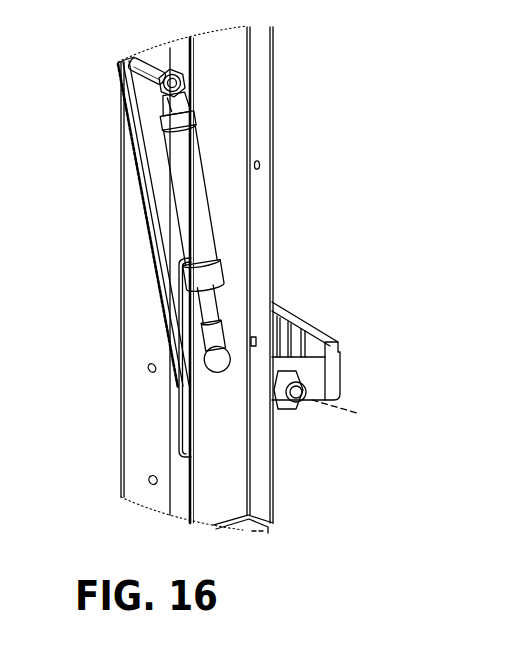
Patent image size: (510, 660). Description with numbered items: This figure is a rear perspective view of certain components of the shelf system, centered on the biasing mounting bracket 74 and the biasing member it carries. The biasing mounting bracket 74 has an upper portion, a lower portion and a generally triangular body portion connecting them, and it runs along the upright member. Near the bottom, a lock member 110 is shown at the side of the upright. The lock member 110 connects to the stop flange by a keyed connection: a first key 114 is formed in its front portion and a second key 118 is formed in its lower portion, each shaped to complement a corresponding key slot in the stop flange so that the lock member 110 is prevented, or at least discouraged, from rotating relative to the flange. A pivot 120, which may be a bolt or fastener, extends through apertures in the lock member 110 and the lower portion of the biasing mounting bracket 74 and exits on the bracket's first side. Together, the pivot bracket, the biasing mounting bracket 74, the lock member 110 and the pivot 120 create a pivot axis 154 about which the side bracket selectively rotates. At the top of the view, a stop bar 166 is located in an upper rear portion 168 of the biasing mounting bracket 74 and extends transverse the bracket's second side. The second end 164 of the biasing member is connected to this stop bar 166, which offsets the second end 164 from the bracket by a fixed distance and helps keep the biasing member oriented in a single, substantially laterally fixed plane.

The biasing mounting bracket 74 is at (140, 150).
The lock member 110 is at (325, 383).
The first key 114 is at (340, 355).
The second key 118 is at (287, 412).
The pivot 120 is at (296, 378).
The pivot axis 154 is at (357, 413).
The second end 164 is at (200, 373).
The stop bar 166 is at (140, 72).
The upper rear portion 168 is at (126, 52).